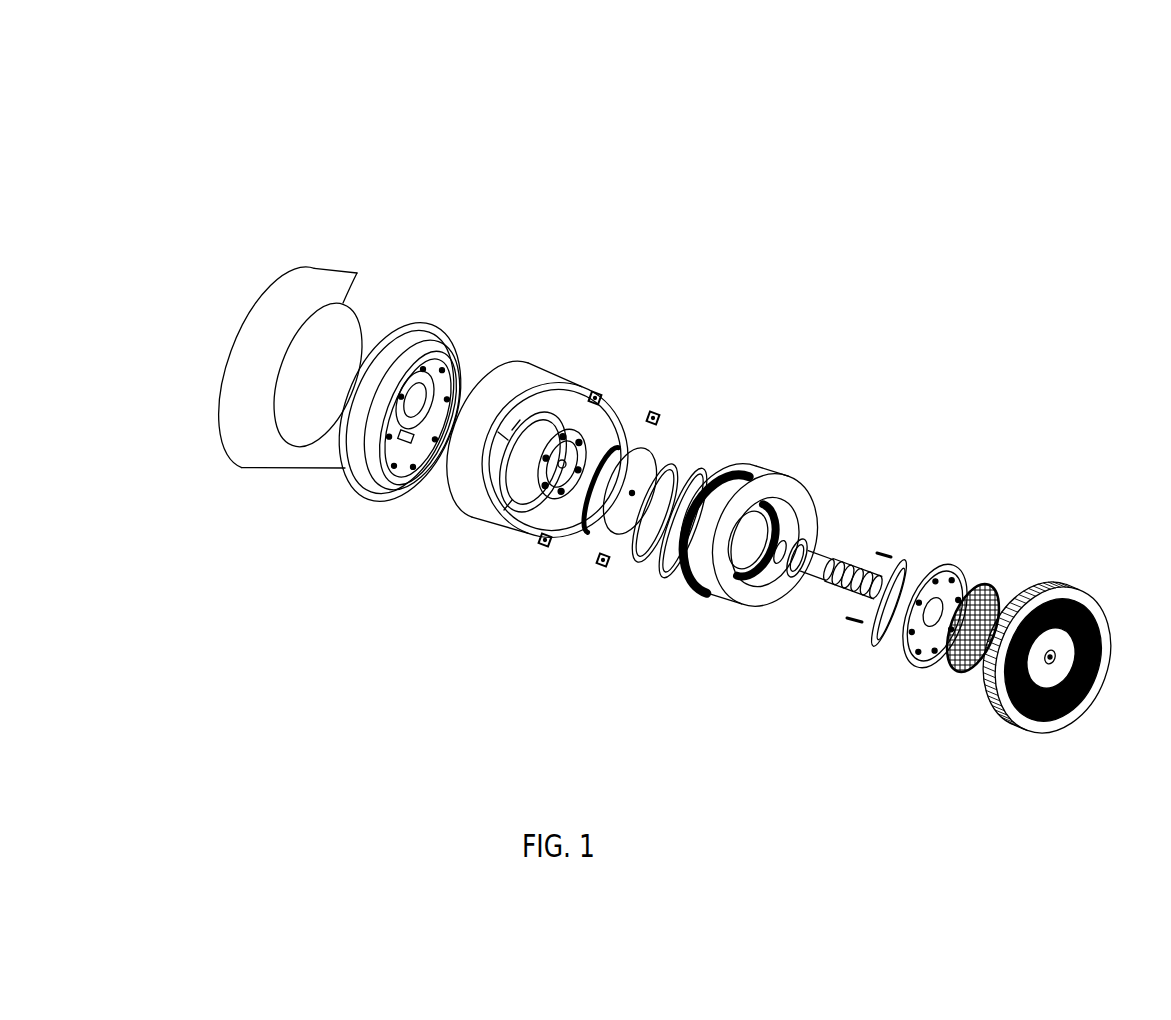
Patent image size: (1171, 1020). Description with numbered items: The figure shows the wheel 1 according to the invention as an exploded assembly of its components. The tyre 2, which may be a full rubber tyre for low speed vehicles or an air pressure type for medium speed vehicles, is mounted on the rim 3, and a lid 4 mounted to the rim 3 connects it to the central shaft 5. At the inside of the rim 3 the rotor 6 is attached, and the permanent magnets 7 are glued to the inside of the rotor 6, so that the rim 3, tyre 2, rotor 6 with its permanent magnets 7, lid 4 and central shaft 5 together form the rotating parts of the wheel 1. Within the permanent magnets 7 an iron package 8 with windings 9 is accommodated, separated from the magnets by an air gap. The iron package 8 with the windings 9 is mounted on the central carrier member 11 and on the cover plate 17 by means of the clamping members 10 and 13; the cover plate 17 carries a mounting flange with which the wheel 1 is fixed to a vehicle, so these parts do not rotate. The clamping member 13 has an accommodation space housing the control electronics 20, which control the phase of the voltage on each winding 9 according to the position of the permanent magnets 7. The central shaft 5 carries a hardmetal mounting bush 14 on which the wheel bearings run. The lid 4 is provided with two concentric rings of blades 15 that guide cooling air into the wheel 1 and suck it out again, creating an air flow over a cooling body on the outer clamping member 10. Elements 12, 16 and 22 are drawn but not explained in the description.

The wheel 1 is at (240, 106).
The tyre 2 is at (263, 340).
The rim 3 is at (393, 345).
The lid 4 is at (430, 345).
The central shaft 5 is at (578, 440).
The rotor 6 is at (497, 390).
The permanent magnets 7 is at (533, 477).
The iron package 8 is at (718, 470).
The windings 9 is at (740, 467).
The clamping member 10 is at (640, 488).
The central carrier member 11 is at (665, 478).
The ring 12 is at (905, 580).
The clamping member 13 is at (925, 572).
The hardmetal mounting bush 14 is at (820, 537).
The blades 15 is at (415, 335).
The fastener 16 is at (653, 414).
The cover plate 17 is at (1077, 587).
The control electronics 20 is at (993, 590).
The coupling 22 is at (857, 593).